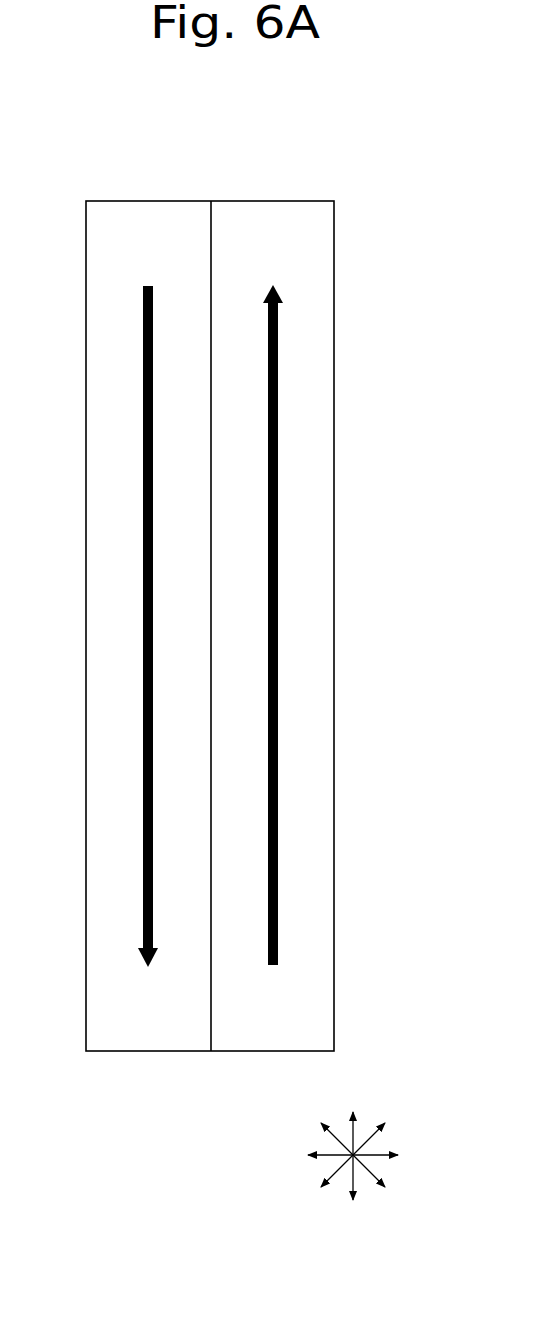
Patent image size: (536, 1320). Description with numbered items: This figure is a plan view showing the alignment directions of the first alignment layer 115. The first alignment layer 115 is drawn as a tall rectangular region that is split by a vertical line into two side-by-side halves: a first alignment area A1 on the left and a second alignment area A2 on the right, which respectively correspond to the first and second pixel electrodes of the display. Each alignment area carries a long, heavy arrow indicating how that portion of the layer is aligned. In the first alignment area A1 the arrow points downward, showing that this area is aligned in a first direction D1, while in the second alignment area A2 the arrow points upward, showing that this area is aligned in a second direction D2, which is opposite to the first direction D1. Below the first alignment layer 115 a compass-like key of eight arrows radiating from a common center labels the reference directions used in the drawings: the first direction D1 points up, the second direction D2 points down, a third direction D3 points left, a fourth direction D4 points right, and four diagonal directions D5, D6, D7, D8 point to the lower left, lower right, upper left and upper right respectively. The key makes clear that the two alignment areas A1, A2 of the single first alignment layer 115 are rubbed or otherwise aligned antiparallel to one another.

The first alignment layer 115 is at (334, 488).
The first alignment area A1 is at (188, 213).
The second alignment area A2 is at (263, 213).
The first direction D1 is at (250, 720).
The second direction D2 is at (313, 745).
The third direction D3 is at (315, 1155).
The fourth direction D4 is at (388, 1155).
The fifth direction D5 is at (325, 1185).
The sixth direction D6 is at (380, 1185).
The seventh direction D7 is at (325, 1127).
The eighth direction D8 is at (380, 1127).